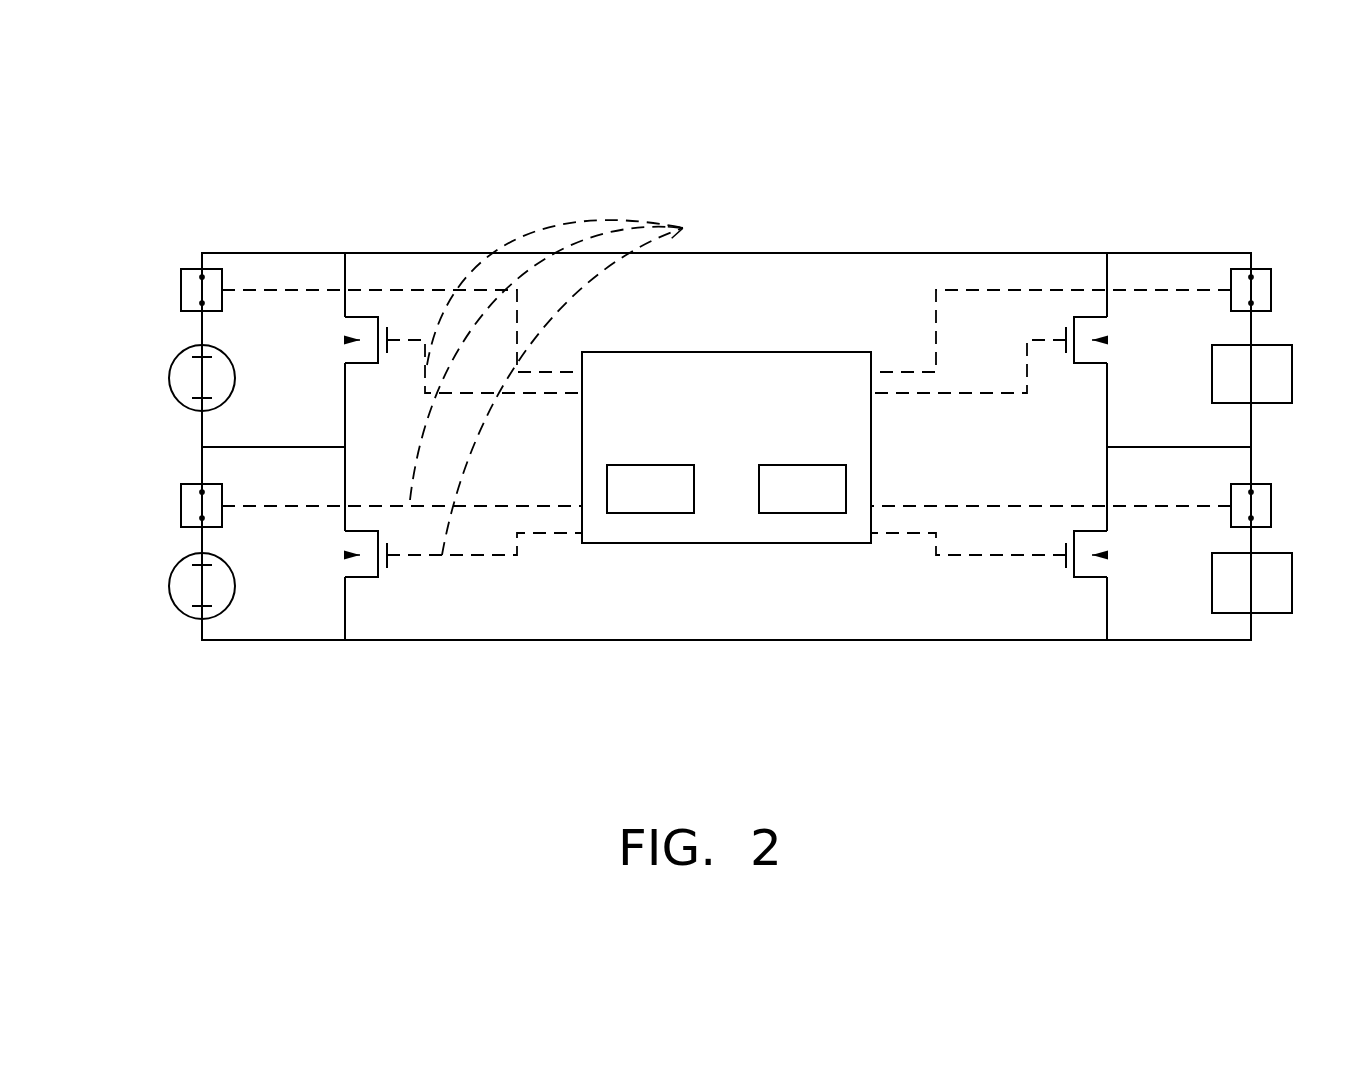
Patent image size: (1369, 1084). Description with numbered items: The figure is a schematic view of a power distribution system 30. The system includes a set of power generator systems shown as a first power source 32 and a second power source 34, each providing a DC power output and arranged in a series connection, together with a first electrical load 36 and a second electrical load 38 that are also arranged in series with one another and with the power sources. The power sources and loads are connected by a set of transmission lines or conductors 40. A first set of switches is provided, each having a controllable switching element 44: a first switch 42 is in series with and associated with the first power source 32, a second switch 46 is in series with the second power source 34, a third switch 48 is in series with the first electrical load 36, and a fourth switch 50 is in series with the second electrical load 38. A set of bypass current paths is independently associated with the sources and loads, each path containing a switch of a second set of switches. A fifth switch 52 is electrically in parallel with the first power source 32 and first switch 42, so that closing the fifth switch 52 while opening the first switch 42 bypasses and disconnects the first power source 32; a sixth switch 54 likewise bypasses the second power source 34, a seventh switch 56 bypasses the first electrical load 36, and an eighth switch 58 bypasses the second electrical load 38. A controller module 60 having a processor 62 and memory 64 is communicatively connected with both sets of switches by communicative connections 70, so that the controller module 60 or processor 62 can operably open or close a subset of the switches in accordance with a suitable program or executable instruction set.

The power distribution system 30 is at (702, 130).
The first power source 32 is at (170, 348).
The second power source 34 is at (170, 556).
The first electrical load 36 is at (1212, 383).
The second electrical load 38 is at (1212, 592).
The transmission lines 40 is at (823, 253).
The first switch 42 is at (181, 290).
The controllable switching element 44 is at (205, 283).
The second switch 46 is at (181, 510).
The third switch 48 is at (1272, 282).
The fourth switch 50 is at (1272, 518).
The fifth switch 52 is at (377, 310).
The sixth switch 54 is at (377, 583).
The seventh switch 56 is at (1077, 310).
The eighth switch 58 is at (1077, 583).
The controller module 60 is at (711, 497).
The processor 62 is at (650, 489).
The memory 64 is at (802, 489).
The communicative connections 70 is at (568, 384).